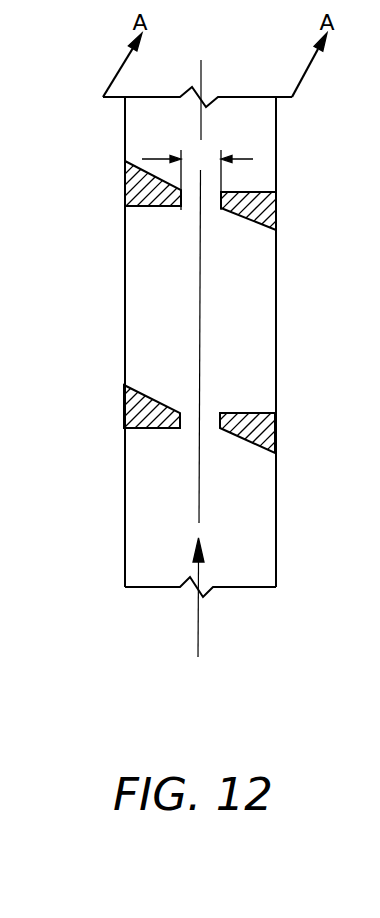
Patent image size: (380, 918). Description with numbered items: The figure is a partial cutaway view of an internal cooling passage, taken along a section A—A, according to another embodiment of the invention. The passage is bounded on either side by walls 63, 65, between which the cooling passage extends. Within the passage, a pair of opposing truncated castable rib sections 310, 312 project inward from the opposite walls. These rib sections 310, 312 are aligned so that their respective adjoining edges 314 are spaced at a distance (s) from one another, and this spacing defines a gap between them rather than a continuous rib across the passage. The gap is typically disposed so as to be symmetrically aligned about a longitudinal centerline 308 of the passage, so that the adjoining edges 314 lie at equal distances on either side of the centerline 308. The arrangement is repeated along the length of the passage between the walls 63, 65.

The longitudinal centerline 308 is at (201, 62).
The truncated castable rib section 310 is at (125, 188).
The truncated castable rib section 312 is at (277, 200).
The adjoining edges 314 is at (182, 197).
The side wall 63 is at (276, 315).
The side wall 65 is at (124, 325).